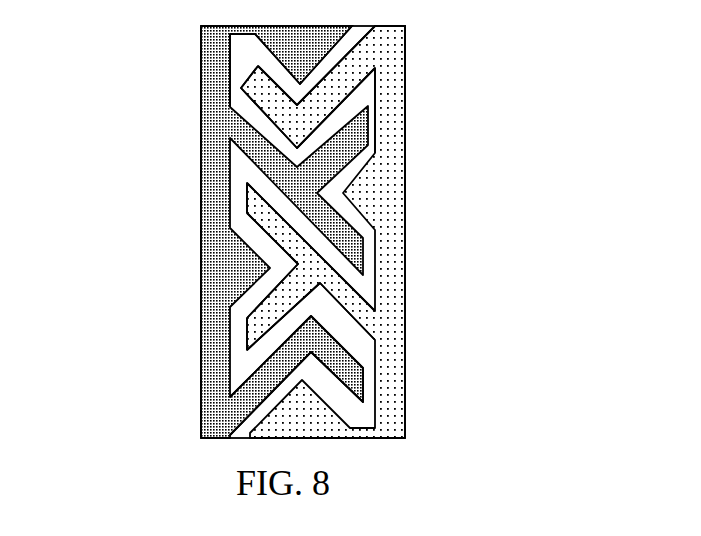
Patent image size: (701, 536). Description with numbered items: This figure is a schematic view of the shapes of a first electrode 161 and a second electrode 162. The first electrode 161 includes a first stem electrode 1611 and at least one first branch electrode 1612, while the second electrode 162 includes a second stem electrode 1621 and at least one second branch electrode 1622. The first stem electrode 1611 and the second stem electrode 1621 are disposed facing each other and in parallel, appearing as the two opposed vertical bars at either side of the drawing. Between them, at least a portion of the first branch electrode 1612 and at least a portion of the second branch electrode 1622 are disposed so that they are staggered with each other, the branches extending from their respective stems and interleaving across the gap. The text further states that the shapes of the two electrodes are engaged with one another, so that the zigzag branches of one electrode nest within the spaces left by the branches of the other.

The first electrode 161 is at (197, 232).
The first stem electrode 1611 is at (215, 72).
The first branch electrode 1612 is at (257, 386).
The second electrode 162 is at (390, 232).
The second stem electrode 1621 is at (385, 128).
The second branch electrode 1622 is at (348, 295).